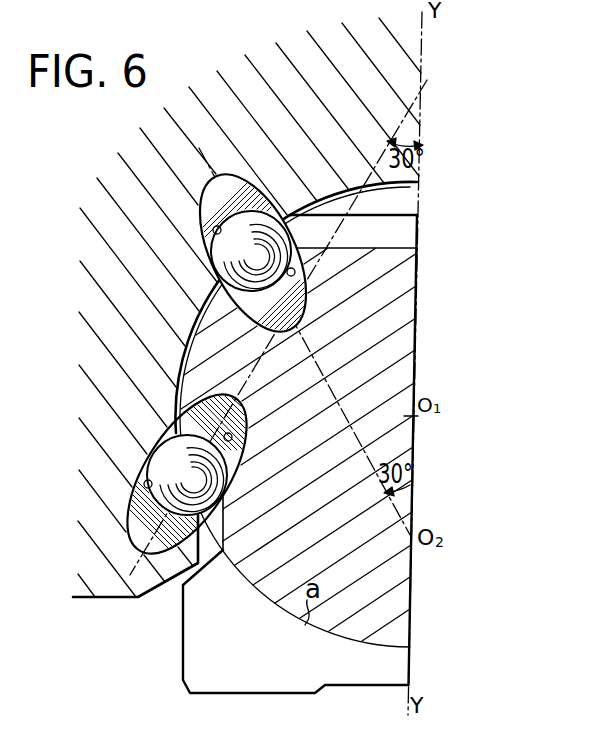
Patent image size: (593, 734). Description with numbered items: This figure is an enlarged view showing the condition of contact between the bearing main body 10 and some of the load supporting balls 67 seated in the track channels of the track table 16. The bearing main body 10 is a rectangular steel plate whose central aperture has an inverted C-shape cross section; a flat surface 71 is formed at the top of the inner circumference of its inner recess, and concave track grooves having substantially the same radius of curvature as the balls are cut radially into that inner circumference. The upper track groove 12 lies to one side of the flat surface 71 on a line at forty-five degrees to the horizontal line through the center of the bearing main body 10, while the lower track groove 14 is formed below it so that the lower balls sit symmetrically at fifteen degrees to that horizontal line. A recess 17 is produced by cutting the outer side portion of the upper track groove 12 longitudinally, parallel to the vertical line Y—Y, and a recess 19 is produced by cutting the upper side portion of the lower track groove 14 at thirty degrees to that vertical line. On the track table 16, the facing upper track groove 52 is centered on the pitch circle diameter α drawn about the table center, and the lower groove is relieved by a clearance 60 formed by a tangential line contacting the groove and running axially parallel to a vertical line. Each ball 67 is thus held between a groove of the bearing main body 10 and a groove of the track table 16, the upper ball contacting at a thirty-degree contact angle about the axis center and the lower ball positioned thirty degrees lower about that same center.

The bearing main body 10 is at (333, 90).
The track groove 12 is at (217, 350).
The track groove 14 is at (231, 438).
The track table 16 is at (191, 672).
The recess 17 is at (198, 288).
The recess 19 is at (173, 432).
The track groove 52 is at (298, 274).
The clearance 60 is at (224, 516).
The ball 67 is at (256, 213).
The flat surface 71 is at (403, 216).